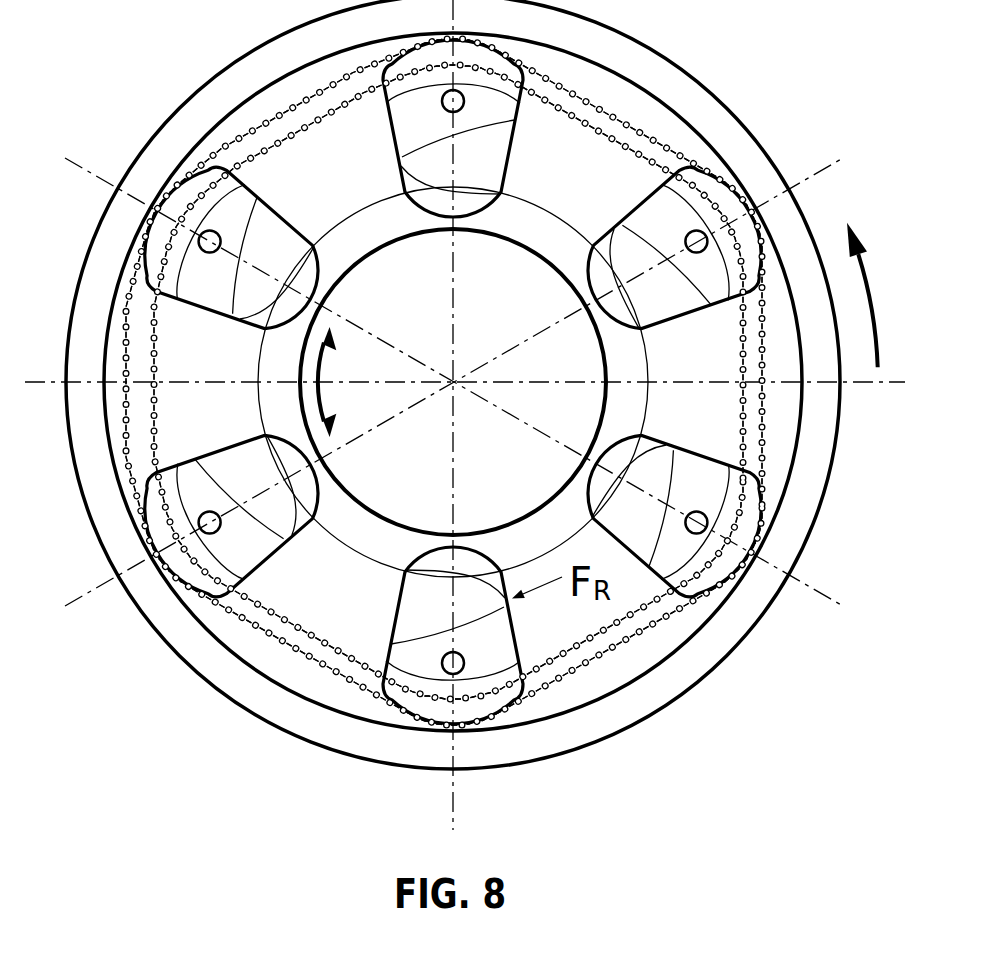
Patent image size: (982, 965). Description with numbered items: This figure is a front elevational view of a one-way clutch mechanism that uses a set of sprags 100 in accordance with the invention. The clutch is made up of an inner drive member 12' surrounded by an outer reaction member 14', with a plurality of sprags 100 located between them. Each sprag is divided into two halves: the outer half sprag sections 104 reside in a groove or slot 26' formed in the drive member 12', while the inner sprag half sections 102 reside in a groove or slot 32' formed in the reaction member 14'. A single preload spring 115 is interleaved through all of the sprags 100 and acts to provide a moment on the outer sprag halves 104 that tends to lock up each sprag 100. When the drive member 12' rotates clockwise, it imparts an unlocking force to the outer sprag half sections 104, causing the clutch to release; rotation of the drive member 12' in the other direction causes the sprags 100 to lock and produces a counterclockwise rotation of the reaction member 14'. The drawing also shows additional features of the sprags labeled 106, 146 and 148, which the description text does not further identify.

The inner drive member 12' is at (453, 382).
The outer reaction member 14' is at (453, 385).
The groove or slot of the drive member 26' is at (453, 382).
The groove or slot of the reaction member 32' is at (453, 403).
The sprag 100 is at (525, 645).
The inner sprag half section 102 is at (495, 700).
The outer half sprag section 104 is at (468, 558).
The pad hole 106 is at (443, 672).
The preload spring 115 is at (658, 628).
The pad friction surface 146 is at (428, 636).
The cable 148 is at (513, 628).